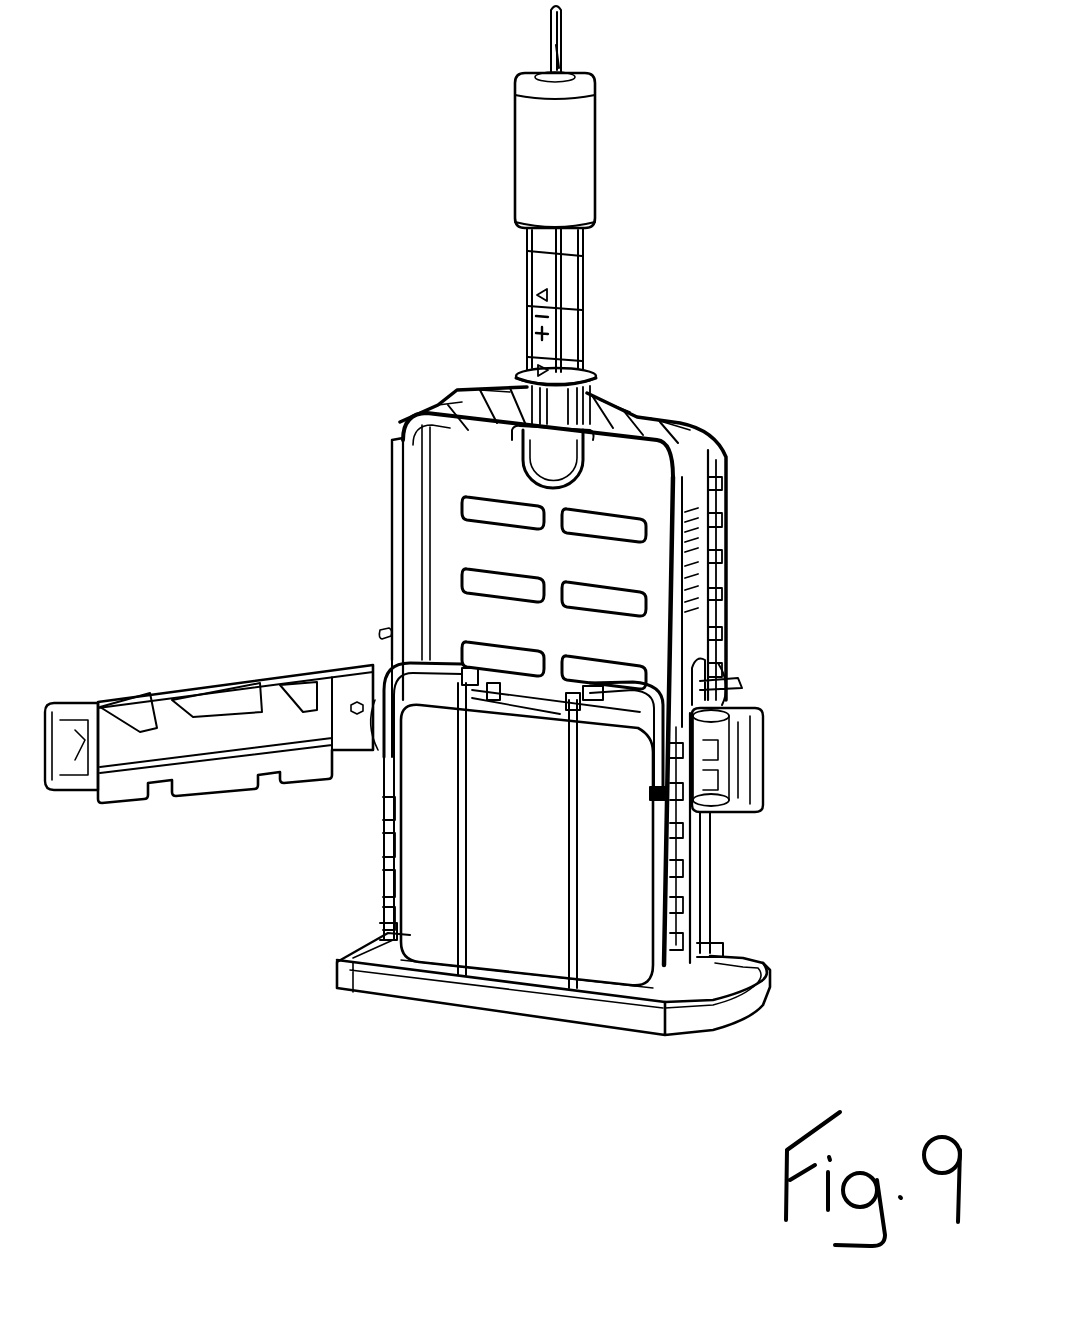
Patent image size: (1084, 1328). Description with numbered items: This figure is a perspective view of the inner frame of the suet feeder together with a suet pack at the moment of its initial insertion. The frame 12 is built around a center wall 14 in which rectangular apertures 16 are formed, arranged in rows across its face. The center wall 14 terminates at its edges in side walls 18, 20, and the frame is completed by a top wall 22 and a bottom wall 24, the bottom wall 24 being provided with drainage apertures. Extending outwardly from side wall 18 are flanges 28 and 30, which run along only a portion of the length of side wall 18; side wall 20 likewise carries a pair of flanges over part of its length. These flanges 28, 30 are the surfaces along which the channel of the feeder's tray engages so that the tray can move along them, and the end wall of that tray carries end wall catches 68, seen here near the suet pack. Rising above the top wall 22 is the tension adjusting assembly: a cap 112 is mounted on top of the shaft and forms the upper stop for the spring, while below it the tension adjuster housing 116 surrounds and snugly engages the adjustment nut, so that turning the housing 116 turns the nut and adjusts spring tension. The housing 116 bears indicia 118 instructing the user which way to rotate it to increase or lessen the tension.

The frame 12 is at (772, 411).
The center wall 14 is at (492, 474).
The rectangular apertures 16 is at (647, 525).
The side wall 18 is at (417, 529).
The side wall 20 is at (695, 633).
The top wall 22 is at (683, 430).
The bottom wall 24 is at (715, 965).
The flange 28 is at (398, 556).
The flange 30 is at (672, 563).
The end wall catches 68 is at (487, 710).
The cap 112 is at (573, 155).
The tension adjuster housing 116 is at (575, 287).
The indicia 118 is at (535, 293).